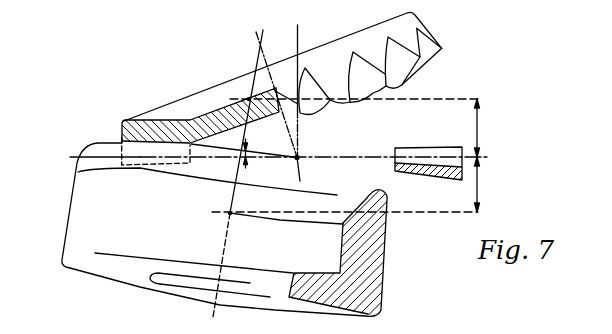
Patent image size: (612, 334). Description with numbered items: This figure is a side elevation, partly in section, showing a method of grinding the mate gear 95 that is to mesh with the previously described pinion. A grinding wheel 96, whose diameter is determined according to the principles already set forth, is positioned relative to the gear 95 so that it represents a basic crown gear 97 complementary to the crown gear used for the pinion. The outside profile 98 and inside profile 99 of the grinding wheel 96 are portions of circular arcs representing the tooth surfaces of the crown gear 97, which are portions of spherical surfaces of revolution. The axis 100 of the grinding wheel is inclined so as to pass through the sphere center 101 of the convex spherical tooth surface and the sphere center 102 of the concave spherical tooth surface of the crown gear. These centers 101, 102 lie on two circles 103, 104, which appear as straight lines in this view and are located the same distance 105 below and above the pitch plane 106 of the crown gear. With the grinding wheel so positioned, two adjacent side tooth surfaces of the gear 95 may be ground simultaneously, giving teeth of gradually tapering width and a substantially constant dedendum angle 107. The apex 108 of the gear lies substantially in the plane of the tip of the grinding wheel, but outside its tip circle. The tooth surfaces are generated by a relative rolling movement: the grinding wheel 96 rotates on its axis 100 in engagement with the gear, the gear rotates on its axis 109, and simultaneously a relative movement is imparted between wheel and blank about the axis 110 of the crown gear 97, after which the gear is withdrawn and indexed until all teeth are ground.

The mate gear 95 is at (153, 112).
The grinding wheel 96 is at (72, 238).
The basic crown gear 97 is at (425, 148).
The outside profile 98 is at (385, 207).
The inside profile 99 is at (360, 211).
The axis of the grinding wheel 100 is at (225, 248).
The sphere center 101 is at (229, 214).
The sphere center 102 is at (249, 98).
The circle 103 is at (410, 213).
The circle 104 is at (420, 99).
The distance 105 is at (478, 128).
The pitch plane 106 is at (482, 157).
The dedendum angle 107 is at (249, 147).
The apex of the gear 108 is at (299, 156).
The axis of the gear 109 is at (258, 33).
The axis of the crown gear 110 is at (298, 38).